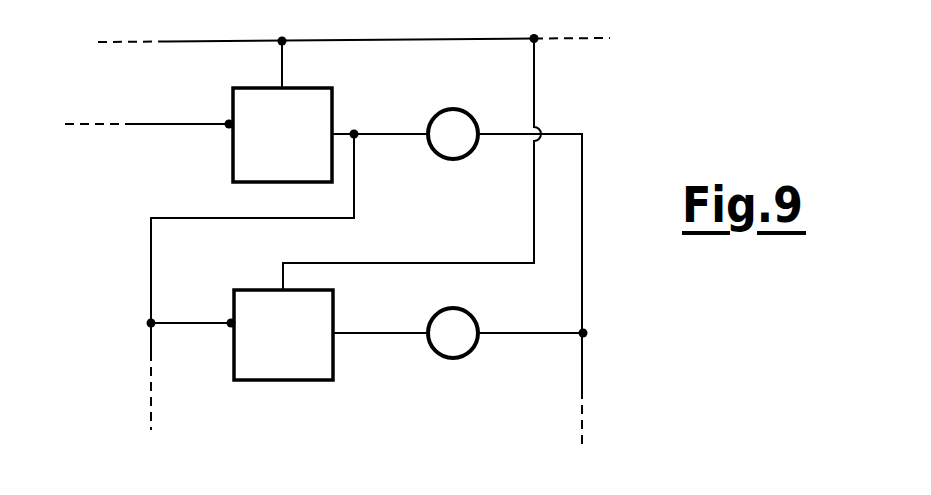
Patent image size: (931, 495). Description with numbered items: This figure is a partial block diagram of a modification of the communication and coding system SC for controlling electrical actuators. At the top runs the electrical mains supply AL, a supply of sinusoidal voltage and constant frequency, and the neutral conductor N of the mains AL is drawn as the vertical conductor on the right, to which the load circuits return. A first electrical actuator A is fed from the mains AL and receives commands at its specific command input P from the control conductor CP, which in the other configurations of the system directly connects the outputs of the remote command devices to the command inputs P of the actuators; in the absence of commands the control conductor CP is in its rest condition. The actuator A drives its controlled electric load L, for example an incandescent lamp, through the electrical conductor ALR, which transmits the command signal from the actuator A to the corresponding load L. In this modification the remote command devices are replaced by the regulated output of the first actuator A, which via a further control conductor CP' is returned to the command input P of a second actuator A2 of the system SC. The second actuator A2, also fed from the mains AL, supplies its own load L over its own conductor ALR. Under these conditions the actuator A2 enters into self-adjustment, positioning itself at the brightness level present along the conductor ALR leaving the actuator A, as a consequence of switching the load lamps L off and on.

The electrical mains supply AL is at (283, 65).
The control conductor CP is at (149, 103).
The command input P is at (229, 121).
The electrical actuator A is at (318, 105).
The electrical conductor ALR is at (398, 132).
The controlled electric load L is at (458, 124).
The control conductor CP' is at (253, 280).
The second actuator A2 is at (320, 362).
The neutral conductor N is at (584, 352).
The communication and coding system SC is at (612, 88).